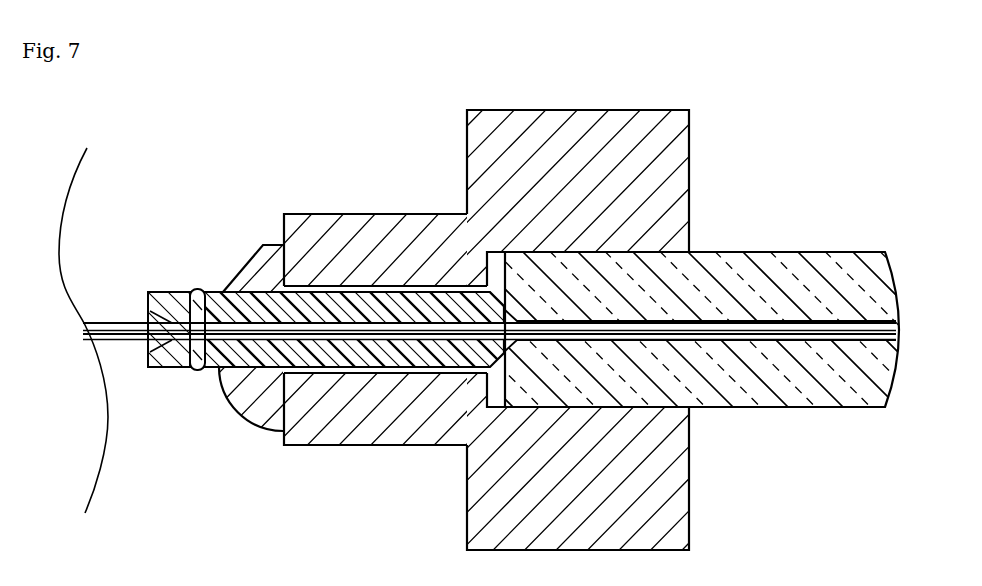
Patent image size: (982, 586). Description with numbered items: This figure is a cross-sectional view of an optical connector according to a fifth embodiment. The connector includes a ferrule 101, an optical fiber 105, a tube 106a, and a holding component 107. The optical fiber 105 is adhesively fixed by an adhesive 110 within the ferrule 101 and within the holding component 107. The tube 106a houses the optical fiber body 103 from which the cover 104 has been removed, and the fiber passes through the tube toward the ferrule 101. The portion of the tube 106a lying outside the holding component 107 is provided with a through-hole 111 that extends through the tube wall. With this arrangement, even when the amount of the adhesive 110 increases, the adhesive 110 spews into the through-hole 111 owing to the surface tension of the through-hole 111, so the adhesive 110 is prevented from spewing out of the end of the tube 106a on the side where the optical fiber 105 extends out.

The ferrule 101 is at (785, 252).
The optical fiber body 103 is at (292, 330).
The cover 104 is at (130, 343).
The optical fiber 105 is at (110, 319).
The tube 106a is at (373, 305).
The holding component 107 is at (689, 151).
The adhesive 110 is at (485, 268).
The through-hole 111 is at (189, 291).